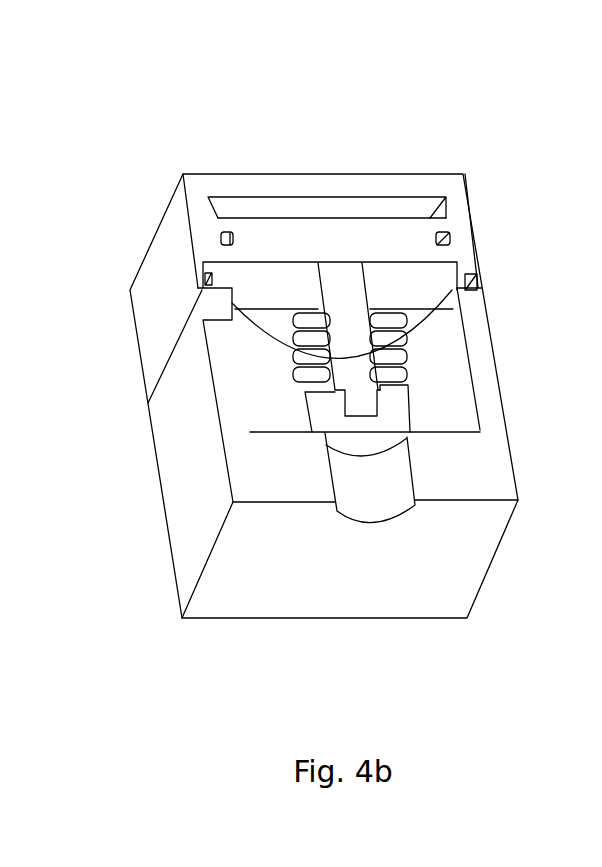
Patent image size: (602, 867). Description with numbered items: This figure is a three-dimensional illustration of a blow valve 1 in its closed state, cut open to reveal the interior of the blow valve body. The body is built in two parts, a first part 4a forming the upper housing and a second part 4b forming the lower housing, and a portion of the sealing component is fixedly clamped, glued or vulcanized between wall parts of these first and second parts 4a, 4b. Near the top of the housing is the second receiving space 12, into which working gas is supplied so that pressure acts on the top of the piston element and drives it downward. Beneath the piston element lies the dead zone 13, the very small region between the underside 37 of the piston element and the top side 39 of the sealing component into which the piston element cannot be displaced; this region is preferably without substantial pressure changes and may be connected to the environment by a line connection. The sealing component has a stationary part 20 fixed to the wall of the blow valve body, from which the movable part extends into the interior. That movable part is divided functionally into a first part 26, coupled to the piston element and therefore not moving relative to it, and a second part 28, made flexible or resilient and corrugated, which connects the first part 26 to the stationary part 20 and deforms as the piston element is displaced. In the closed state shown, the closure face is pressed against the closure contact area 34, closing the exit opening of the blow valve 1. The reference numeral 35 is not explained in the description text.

The blow valve 1 is at (432, 76).
The first part of the blow valve body 4a is at (460, 180).
The second part of the blow valve body 4b is at (485, 470).
The second receiving space 12 is at (256, 205).
The stop surface 35 is at (345, 219).
The dead zone 13 is at (433, 262).
The stationary part 20 is at (418, 287).
The top side of the sealing component 39 is at (207, 283).
The underside of the piston element 37 is at (373, 261).
The second part of the movable part 28 is at (300, 358).
The first part of the movable part 26 is at (317, 408).
The closure contact area 34 is at (322, 433).